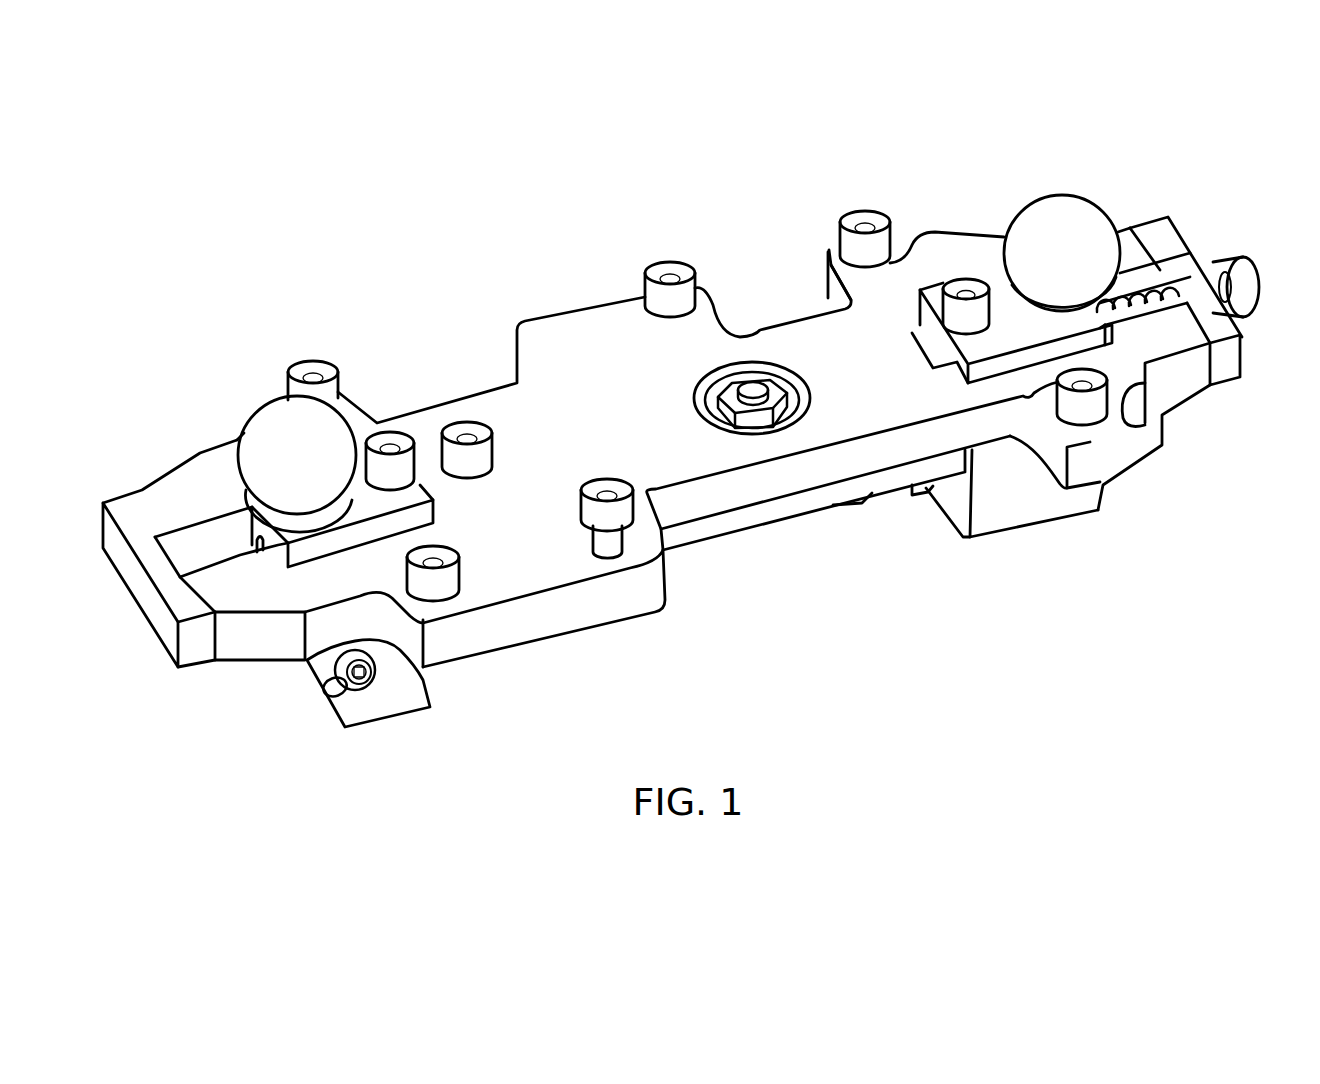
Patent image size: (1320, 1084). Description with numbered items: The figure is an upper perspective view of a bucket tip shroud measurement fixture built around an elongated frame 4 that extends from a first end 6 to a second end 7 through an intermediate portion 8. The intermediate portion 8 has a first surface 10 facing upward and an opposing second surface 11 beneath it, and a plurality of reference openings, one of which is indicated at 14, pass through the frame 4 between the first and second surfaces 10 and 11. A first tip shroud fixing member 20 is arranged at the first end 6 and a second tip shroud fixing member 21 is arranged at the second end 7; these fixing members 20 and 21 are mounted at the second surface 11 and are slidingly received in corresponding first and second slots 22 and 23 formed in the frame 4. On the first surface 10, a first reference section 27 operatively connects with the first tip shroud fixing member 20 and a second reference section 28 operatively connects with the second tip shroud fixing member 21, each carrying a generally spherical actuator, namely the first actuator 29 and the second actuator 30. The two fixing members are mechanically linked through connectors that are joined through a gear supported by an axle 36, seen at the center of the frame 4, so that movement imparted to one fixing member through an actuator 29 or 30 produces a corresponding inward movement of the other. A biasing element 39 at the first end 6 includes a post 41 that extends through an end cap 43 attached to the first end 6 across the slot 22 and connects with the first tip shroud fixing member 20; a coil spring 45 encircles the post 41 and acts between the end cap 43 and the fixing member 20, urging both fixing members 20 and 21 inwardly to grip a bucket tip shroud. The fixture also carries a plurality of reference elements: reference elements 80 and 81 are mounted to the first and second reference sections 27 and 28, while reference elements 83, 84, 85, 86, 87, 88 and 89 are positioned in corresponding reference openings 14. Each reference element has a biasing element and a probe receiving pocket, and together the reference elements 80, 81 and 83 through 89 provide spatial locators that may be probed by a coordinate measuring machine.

The frame 4 is at (590, 300).
The first end 6 is at (1200, 363).
The second end 7 is at (148, 490).
The intermediate portion 8 is at (525, 535).
The first surface 10 is at (868, 298).
The second surface 11 is at (497, 652).
The reference opening 14 is at (600, 548).
The first tip shroud fixing member 20 is at (1040, 547).
The second tip shroud fixing member 21 is at (392, 732).
The first slot 22 is at (1140, 275).
The second slot 23 is at (243, 548).
The first reference section 27 is at (985, 265).
The second reference section 28 is at (322, 572).
The first actuator 29 is at (1025, 233).
The second actuator 30 is at (262, 420).
The axle 36 is at (755, 392).
The biasing element 39 is at (1232, 248).
The post 41 is at (1170, 305).
The end cap 43 is at (1150, 218).
The coil spring 45 is at (1113, 300).
The reference element 80 is at (953, 276).
The reference element 81 is at (400, 455).
The reference element 83 is at (860, 210).
The reference element 84 is at (1085, 422).
The reference element 85 is at (670, 265).
The reference element 86 is at (645, 500).
The reference element 87 is at (466, 585).
The reference element 88 is at (455, 457).
The reference element 89 is at (287, 378).